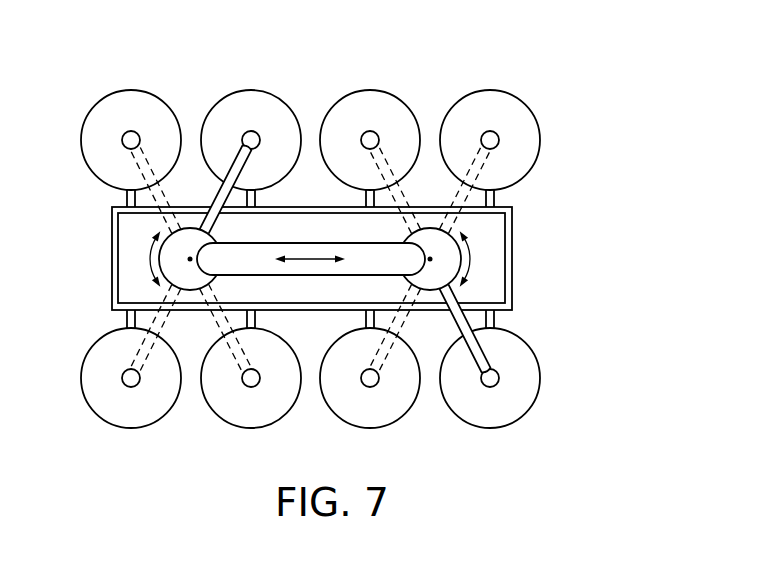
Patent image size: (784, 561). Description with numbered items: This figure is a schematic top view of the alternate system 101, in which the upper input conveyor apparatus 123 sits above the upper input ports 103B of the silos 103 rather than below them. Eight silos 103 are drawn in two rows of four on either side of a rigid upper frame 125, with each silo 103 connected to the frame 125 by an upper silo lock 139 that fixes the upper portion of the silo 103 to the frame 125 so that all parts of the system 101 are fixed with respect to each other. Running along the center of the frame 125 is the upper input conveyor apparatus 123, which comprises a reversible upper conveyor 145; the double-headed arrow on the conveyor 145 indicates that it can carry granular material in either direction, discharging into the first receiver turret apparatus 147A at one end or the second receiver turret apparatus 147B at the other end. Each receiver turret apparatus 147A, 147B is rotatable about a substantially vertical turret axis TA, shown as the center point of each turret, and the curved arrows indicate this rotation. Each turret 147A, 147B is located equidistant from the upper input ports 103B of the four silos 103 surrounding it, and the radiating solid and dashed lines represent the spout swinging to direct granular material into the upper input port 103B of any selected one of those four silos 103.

The system 101 is at (622, 63).
The silo 103 is at (525, 135).
The upper input port 103B is at (490, 131).
The upper input conveyor apparatus 123 is at (230, 283).
The rigid upper frame 125 is at (513, 222).
The upper silo lock 139 is at (125, 197).
The reversible upper conveyor 145 is at (310, 243).
The first receiver turret apparatus 147A is at (452, 285).
The second receiver turret apparatus 147B is at (168, 283).
The turret axis TA is at (190, 259).